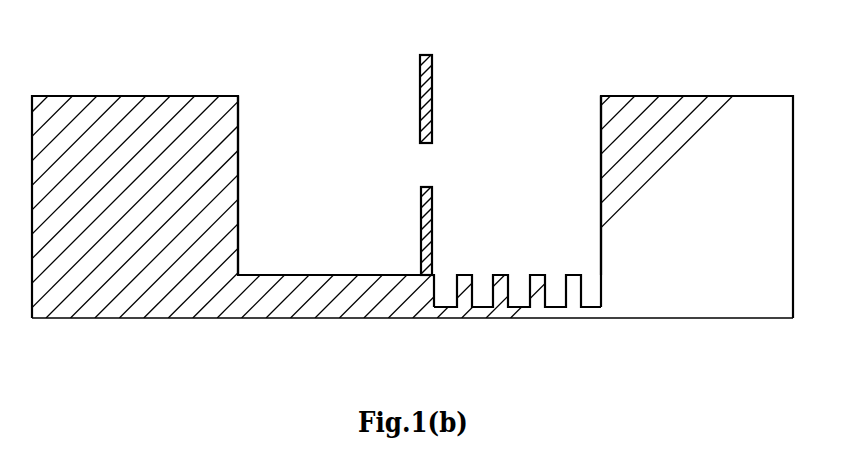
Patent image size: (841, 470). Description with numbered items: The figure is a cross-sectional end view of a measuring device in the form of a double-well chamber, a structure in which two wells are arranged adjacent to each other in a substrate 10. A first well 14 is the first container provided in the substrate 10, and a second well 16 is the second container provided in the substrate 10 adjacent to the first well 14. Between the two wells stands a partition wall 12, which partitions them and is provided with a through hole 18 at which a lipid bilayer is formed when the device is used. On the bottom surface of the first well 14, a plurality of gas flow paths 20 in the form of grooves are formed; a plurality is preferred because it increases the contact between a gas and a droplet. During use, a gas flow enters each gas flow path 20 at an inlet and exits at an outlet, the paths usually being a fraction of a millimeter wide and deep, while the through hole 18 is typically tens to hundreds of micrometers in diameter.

The substrate 10 is at (716, 178).
The partition wall 12 is at (428, 92).
The first well 14 is at (575, 130).
The second well 16 is at (325, 170).
The through hole 18 is at (427, 165).
The gas flow paths 20 is at (557, 293).